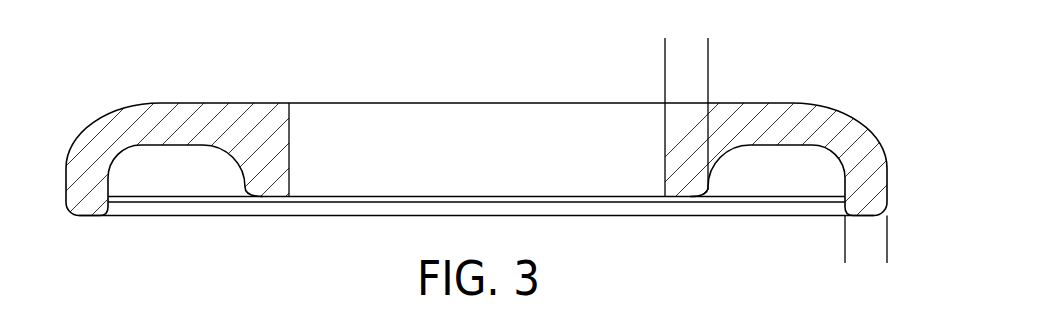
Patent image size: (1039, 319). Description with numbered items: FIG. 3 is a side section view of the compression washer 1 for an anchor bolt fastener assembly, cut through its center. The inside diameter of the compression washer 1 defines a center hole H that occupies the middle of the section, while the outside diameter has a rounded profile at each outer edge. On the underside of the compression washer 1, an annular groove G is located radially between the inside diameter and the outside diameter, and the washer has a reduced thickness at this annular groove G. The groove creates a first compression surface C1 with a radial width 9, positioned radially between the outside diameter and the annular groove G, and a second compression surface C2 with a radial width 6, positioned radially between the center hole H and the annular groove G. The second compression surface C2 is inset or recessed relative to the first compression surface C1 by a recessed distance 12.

The compression washer 1 is at (102, 90).
The center hole H is at (477, 125).
The annular groove G is at (476, 196).
The first compression surface C1 is at (476, 254).
The second compression surface C2 is at (464, 232).
The recessed distance 12 is at (476, 213).
The radial width of second compression surface 6 is at (694, 112).
The radial width of first compression surface 9 is at (873, 243).